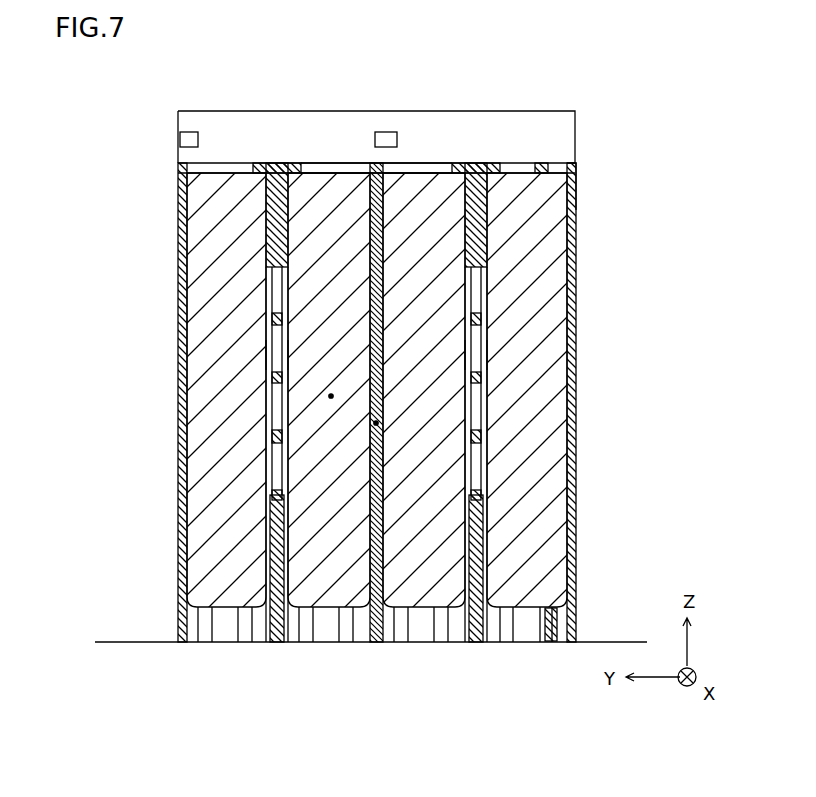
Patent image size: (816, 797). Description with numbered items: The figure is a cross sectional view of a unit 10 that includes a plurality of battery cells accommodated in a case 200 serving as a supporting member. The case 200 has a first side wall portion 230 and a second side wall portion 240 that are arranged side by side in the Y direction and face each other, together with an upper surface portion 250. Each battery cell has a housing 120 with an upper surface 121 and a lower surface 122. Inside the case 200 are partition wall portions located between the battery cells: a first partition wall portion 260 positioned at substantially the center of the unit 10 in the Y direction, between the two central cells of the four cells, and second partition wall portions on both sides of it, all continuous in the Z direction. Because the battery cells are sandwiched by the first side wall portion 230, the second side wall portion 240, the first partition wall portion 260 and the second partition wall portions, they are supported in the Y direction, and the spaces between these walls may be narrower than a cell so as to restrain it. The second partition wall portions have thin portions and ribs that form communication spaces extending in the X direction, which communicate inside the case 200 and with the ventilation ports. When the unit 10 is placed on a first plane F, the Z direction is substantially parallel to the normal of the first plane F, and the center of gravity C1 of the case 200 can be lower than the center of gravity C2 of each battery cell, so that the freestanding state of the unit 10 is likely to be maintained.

The unit 10 is at (157, 94).
The case 200 is at (165, 182).
The first side wall portion 230 is at (184, 518).
The second side wall portion 240 is at (576, 437).
The housing 120 is at (584, 191).
The upper surface 121 is at (542, 161).
The lower surface 122 is at (552, 624).
The first partition wall portion 260 is at (388, 205).
The upper surface portion 250 is at (362, 172).
The center of gravity of battery cell C2 is at (319, 395).
The center of gravity of case C1 is at (364, 422).
The first plane F is at (122, 631).